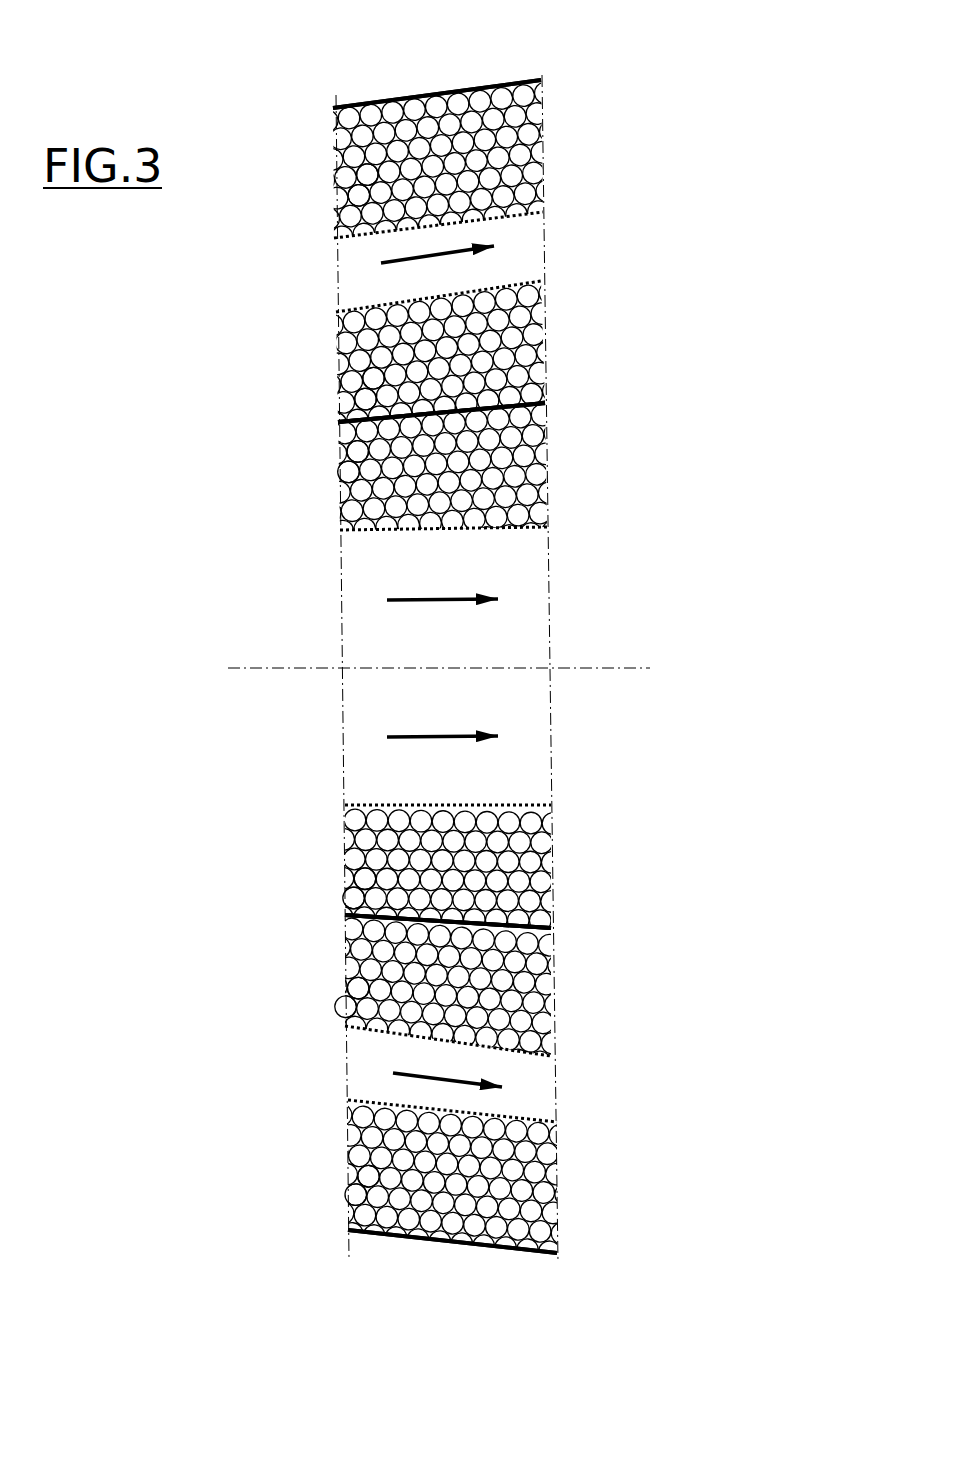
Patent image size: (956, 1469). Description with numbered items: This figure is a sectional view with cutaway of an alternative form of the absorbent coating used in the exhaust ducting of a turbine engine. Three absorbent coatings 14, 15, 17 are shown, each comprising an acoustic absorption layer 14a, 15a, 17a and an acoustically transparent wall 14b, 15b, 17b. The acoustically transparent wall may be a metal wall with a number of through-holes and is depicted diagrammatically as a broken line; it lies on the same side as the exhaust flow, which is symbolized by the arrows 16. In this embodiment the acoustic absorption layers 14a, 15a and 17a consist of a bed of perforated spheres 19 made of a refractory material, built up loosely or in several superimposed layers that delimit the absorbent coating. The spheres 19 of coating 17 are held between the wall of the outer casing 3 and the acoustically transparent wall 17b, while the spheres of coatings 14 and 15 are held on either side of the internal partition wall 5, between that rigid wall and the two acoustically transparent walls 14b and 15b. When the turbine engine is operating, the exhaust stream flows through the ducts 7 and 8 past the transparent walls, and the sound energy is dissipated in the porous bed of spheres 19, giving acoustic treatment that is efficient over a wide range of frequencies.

The outer casing wall 3 is at (401, 93).
The internal partition wall 5 is at (352, 426).
The duct 7 is at (530, 566).
The duct 8 is at (525, 236).
The absorbent coating 14 is at (561, 347).
The acoustic absorption layer 14a is at (342, 388).
The acoustically transparent wall 14b is at (340, 302).
The absorbent coating 15 is at (564, 462).
The acoustic absorption layer 15a is at (352, 496).
The acoustically transparent wall 15b is at (342, 534).
The arrows 16 is at (405, 263).
The absorbent coating 17 is at (558, 152).
The acoustic absorption layer 17a is at (338, 142).
The acoustically transparent wall 17b is at (338, 246).
The perforated spheres 19 is at (365, 166).